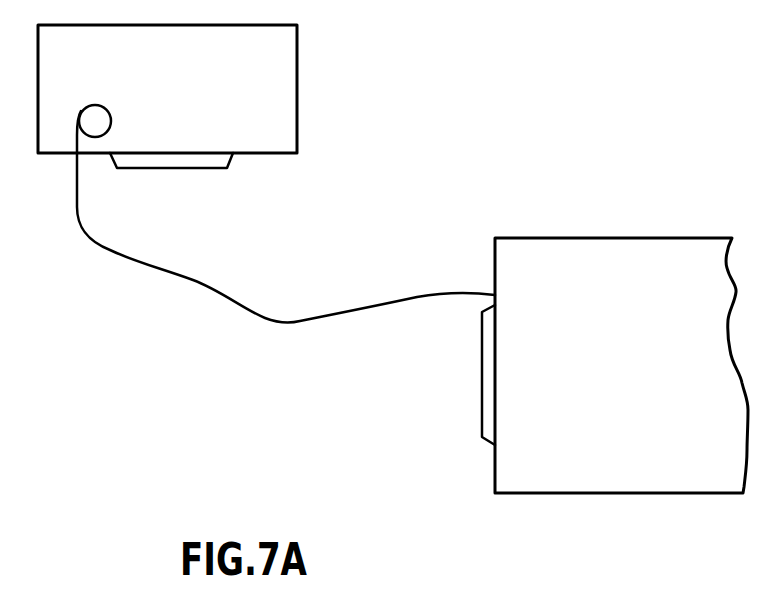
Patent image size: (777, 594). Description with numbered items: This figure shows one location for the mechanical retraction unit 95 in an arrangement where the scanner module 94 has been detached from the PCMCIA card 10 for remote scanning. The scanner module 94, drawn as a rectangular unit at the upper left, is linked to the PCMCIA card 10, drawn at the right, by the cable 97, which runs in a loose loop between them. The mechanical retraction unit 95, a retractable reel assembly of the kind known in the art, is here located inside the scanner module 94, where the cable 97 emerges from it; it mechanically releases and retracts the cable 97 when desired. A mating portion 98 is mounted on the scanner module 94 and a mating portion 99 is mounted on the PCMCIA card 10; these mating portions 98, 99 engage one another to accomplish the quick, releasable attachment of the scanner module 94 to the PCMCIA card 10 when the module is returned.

The PCMCIA card 10 is at (572, 250).
The scanner module 94 is at (297, 48).
The mechanical retraction unit 95 is at (109, 115).
The cable 97 is at (295, 325).
The mating portion 98 is at (483, 440).
The mating portion 99 is at (225, 168).